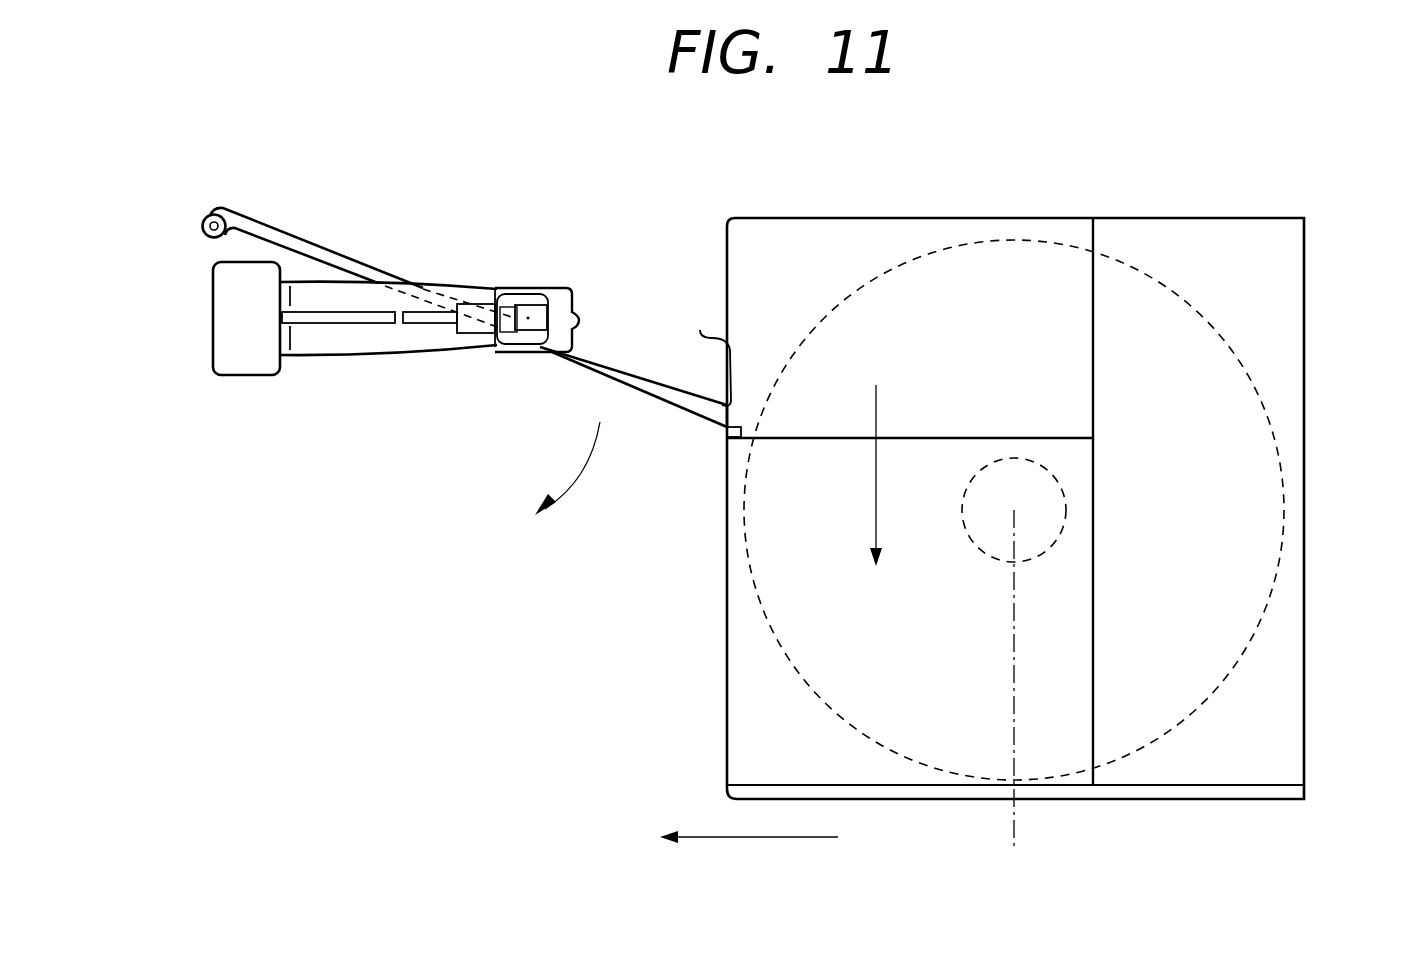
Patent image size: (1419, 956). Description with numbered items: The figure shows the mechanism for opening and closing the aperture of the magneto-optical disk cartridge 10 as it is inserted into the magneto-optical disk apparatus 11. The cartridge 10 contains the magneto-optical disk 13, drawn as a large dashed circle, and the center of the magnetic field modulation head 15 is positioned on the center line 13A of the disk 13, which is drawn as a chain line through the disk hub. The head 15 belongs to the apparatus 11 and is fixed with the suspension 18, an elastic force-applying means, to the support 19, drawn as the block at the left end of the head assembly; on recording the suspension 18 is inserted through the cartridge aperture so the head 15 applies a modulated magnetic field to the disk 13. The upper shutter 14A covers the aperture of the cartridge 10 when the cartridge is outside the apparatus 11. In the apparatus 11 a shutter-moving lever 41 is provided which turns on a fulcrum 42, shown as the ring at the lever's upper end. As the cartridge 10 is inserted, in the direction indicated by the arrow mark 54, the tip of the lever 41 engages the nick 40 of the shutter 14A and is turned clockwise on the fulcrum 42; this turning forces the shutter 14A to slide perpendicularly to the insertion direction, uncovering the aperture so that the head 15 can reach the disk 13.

The magneto-optical disk cartridge 10 is at (1326, 741).
The magneto-optical disk apparatus 11 is at (452, 208).
The magneto-optical disk 13 is at (867, 283).
The center line 13A is at (1012, 822).
The upper shutter 14A is at (1093, 357).
The magnetic field modulation head 15 is at (531, 304).
The suspension 18 is at (320, 280).
The support 19 is at (213, 265).
The nick 40 is at (700, 330).
The shutter-moving lever 41 is at (390, 275).
The fulcrum 42 is at (215, 213).
The arrow mark 54 is at (776, 838).